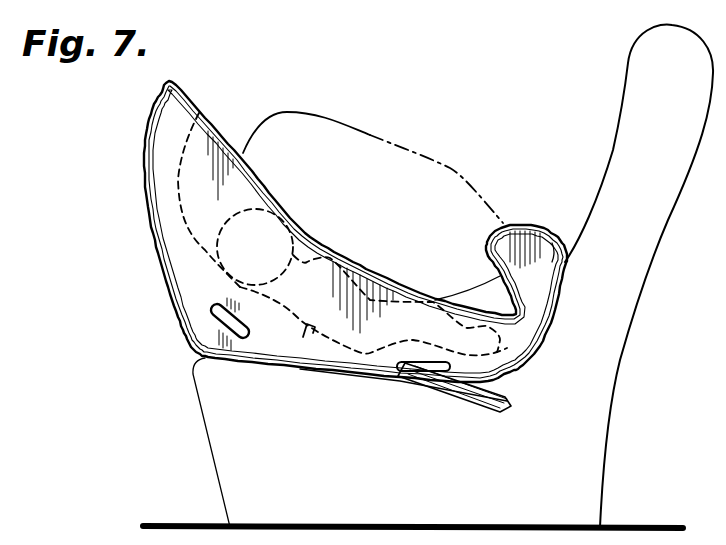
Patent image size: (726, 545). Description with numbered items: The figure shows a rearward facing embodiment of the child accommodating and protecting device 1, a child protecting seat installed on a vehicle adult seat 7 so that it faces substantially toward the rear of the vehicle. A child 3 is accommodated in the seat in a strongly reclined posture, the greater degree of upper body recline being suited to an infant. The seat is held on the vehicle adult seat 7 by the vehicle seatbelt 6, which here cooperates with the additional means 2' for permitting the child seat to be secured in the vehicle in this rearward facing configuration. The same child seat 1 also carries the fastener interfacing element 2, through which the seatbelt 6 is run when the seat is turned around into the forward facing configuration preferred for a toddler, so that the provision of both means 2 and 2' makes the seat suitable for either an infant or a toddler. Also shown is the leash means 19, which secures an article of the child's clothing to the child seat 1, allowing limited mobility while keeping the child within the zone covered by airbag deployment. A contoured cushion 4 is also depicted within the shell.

The child accommodating and protecting device 1 is at (146, 135).
The fastener interfacing element 2 is at (152, 317).
The additional means for permitting the child seat to be secured in the vehicle 2' is at (304, 437).
The child 3 is at (222, 235).
The seat cushion 4 is at (450, 168).
The vehicle seatbelt 6 is at (470, 390).
The vehicle adult seat 7 is at (603, 463).
The leash means 19 is at (312, 325).